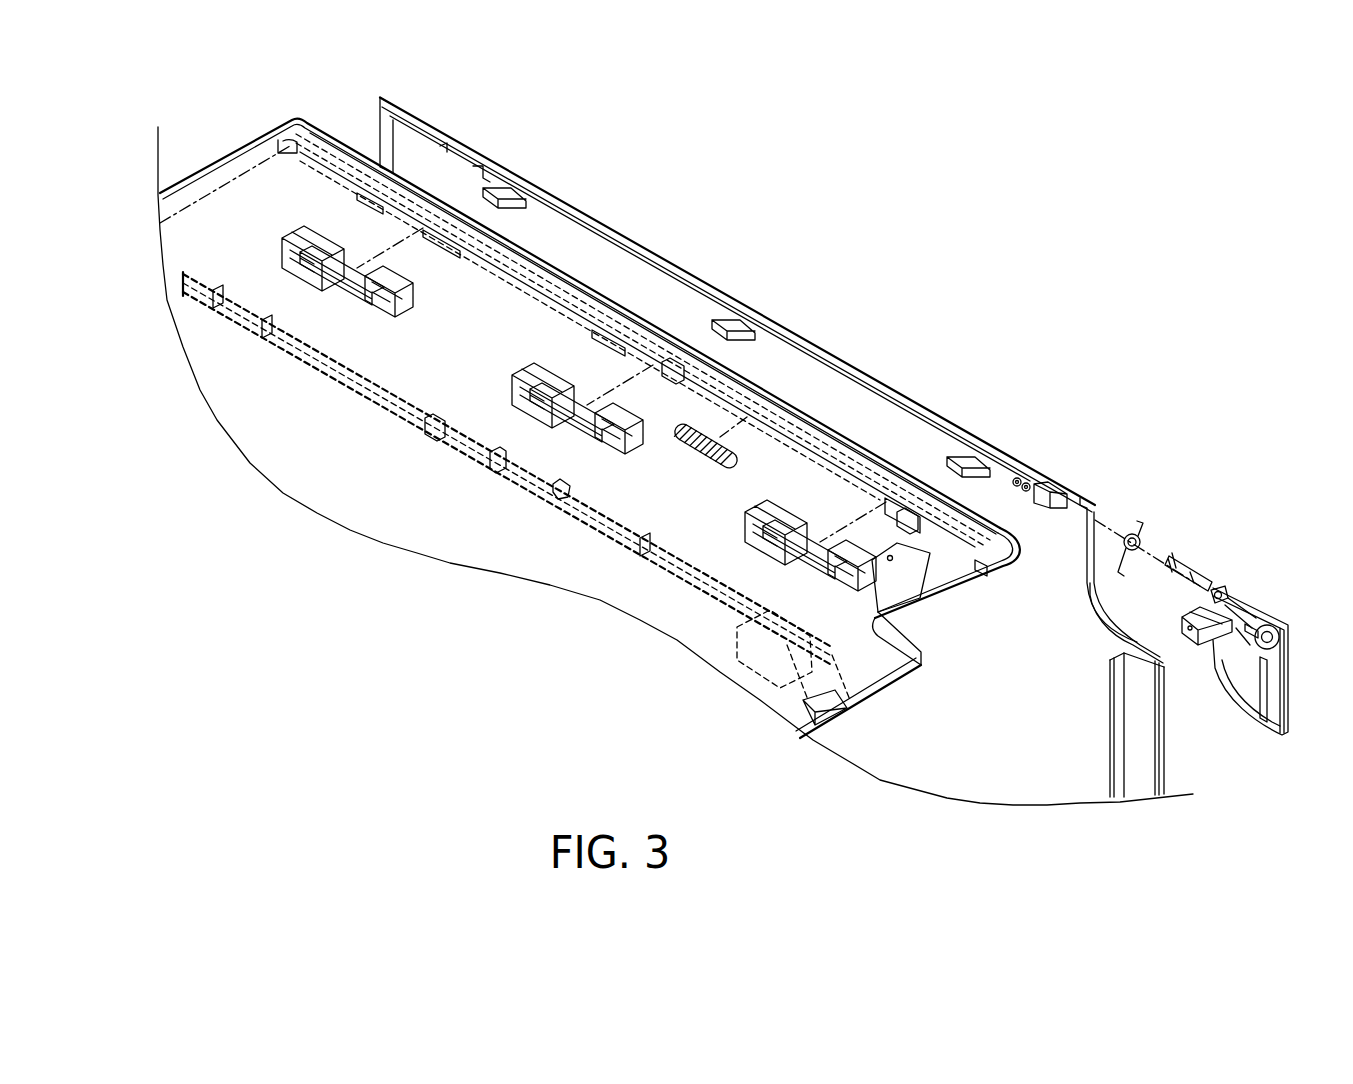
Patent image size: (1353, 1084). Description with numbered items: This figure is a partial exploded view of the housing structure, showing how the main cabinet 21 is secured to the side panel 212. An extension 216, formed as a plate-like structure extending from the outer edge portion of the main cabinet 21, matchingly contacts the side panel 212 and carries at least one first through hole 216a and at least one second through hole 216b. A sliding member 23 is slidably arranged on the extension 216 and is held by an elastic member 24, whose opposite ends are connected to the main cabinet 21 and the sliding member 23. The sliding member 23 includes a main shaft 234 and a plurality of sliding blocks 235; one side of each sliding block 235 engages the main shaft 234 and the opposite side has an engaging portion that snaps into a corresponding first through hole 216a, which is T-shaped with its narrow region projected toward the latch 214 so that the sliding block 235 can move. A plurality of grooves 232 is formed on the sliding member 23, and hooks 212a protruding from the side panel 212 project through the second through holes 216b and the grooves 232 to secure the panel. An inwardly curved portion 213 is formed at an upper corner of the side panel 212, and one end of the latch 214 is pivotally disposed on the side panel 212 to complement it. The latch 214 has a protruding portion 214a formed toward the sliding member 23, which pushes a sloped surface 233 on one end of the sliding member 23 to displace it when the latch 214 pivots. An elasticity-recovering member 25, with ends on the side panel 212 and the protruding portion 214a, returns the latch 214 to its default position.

The main cabinet 21 is at (222, 180).
The sliding member 23 is at (428, 602).
The elastic member 24 is at (690, 450).
The elasticity-recovering member 25 is at (1133, 536).
The side panel 212 is at (1140, 769).
The hooks 212a is at (740, 337).
The inwardly curved portion 213 is at (1087, 577).
The latch 214 is at (1262, 605).
The protruding portion 214a is at (1187, 612).
The extension 216 is at (1000, 550).
The first through hole 216a is at (593, 333).
The second through hole 216b is at (667, 357).
The grooves 232 is at (500, 472).
The sloped surface 233 is at (830, 705).
The main shaft 234 is at (560, 490).
The sliding blocks 235 is at (520, 380).